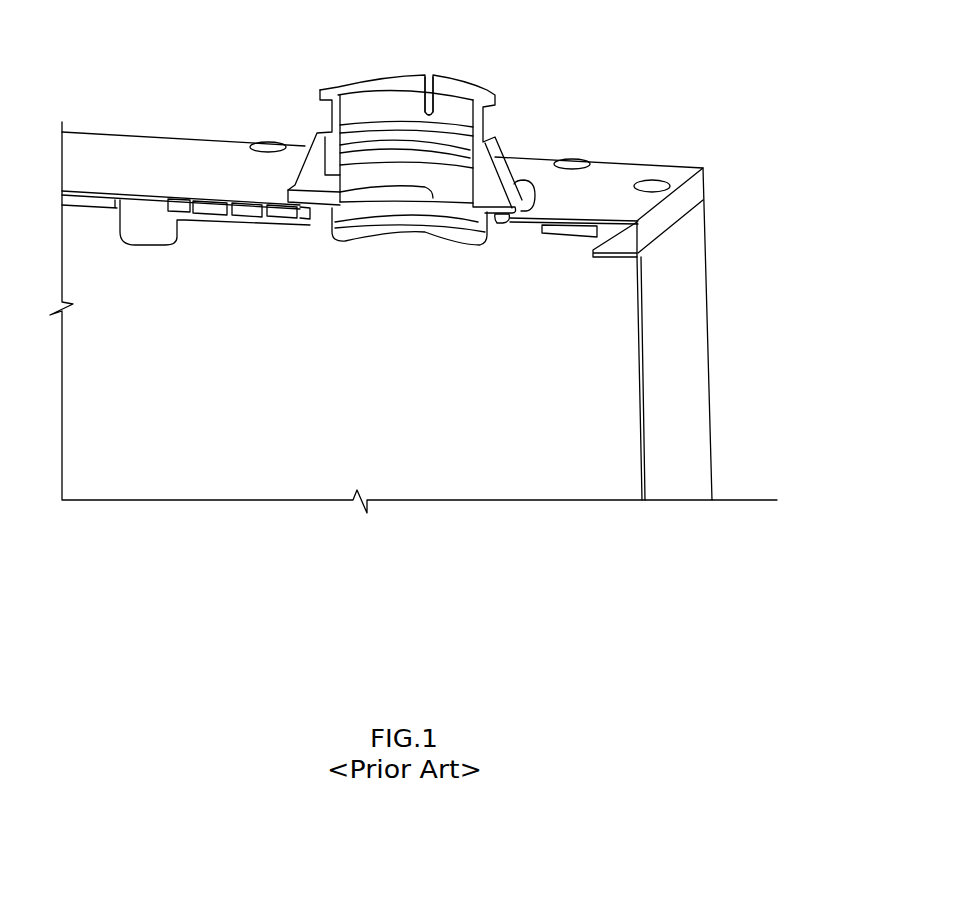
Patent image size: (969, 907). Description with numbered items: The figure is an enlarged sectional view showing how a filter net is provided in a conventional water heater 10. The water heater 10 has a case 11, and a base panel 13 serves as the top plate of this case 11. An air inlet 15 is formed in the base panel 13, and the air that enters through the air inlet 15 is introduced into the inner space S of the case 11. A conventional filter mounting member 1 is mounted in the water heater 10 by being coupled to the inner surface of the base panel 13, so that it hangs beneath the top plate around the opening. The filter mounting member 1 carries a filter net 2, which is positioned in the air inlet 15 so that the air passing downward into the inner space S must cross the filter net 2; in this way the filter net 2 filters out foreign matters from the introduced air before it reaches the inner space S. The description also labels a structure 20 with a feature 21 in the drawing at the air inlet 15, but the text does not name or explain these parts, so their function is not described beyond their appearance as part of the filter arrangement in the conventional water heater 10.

The filter mounting member 1 is at (243, 222).
The filter net 2 is at (418, 237).
The water heater 10 is at (785, 303).
The case 11 is at (688, 308).
The base panel 13 is at (615, 182).
The air inlet 15 is at (497, 223).
The lens holder 20 is at (489, 110).
The slot 21 is at (477, 207).
The inner space S is at (470, 378).